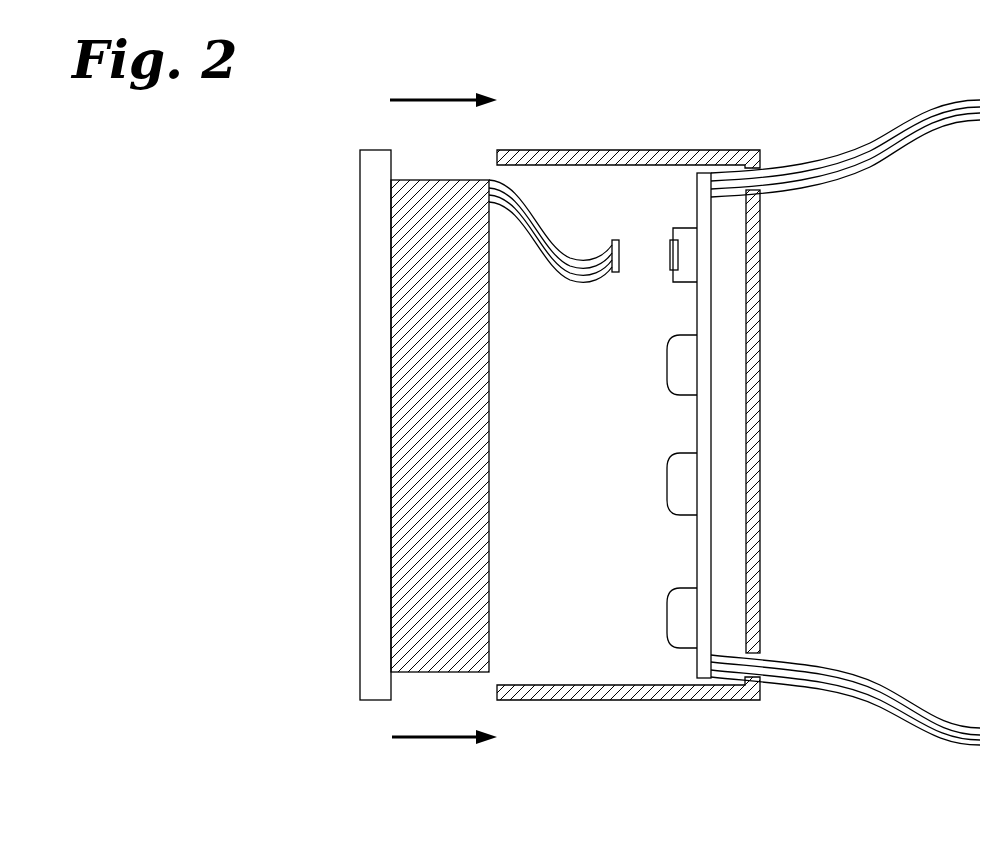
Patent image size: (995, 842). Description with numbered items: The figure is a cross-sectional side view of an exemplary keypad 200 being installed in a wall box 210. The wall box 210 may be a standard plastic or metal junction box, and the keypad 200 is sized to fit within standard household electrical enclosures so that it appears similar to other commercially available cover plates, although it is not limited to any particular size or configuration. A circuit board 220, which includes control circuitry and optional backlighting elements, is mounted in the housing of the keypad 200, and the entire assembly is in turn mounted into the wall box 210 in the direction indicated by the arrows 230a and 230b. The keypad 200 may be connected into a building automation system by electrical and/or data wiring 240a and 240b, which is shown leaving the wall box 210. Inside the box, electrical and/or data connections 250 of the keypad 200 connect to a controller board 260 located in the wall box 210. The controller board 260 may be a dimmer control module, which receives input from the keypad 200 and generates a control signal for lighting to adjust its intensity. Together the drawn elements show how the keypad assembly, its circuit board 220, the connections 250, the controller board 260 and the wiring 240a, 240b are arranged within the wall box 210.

The keypad 200 is at (356, 212).
The wall box 210 is at (640, 150).
The circuit board 220 is at (491, 500).
The arrow 230a is at (424, 100).
The arrow 230b is at (435, 737).
The electrical and/or data wiring 240a is at (933, 103).
The electrical and/or data wiring 240b is at (857, 696).
The electrical and/or data connections 250 is at (616, 273).
The controller board 260 is at (697, 437).